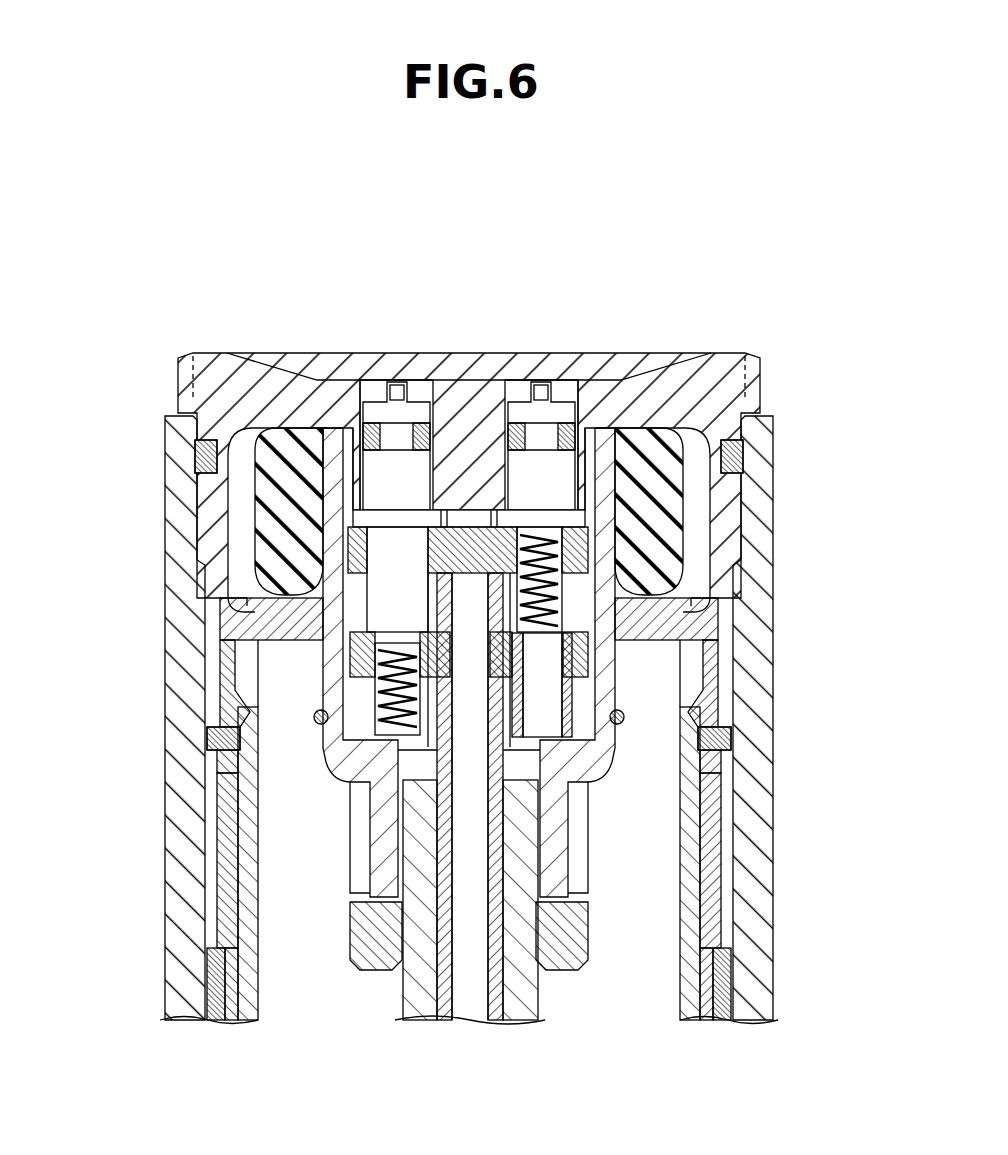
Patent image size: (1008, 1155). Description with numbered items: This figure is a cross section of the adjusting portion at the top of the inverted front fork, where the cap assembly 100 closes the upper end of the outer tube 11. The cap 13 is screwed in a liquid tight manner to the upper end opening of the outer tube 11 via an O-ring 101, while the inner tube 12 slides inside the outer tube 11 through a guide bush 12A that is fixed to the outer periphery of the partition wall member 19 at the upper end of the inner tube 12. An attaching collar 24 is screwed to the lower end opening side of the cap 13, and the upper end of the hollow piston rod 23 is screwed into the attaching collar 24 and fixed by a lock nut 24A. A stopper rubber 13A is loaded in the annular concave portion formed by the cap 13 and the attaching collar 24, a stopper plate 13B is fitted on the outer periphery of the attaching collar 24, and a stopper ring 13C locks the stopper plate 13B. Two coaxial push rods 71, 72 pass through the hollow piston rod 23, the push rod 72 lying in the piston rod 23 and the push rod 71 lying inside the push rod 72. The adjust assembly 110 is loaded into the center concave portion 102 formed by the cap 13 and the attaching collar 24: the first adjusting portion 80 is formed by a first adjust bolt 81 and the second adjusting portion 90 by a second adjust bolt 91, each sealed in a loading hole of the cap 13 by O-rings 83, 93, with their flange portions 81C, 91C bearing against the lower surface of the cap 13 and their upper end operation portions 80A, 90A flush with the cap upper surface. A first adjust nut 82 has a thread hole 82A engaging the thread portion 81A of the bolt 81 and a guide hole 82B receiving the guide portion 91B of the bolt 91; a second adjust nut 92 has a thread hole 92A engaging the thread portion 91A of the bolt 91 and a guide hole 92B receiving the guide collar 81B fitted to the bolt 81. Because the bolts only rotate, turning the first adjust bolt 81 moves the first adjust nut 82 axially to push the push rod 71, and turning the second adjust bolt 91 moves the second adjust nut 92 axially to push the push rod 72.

The cap assembly 100 is at (221, 345).
The cap 13 is at (205, 382).
The stopper rubber 13A is at (263, 523).
The stopper plate 13B is at (240, 625).
The stopper ring 13C is at (247, 712).
The outer tube 11 is at (176, 885).
The inner tube 12 is at (228, 933).
The guide bush 12A is at (210, 967).
The partition wall member 19 is at (225, 1002).
The attaching collar 24 is at (262, 758).
The lock nut 24A is at (567, 930).
The piston rod 23 is at (545, 983).
The push rod 71 is at (470, 828).
The push rod 72 is at (497, 865).
The first adjusting portion 80 is at (520, 403).
The upper end operation portion 80A is at (557, 382).
The first adjust bolt 81 is at (559, 662).
The thread portion 81A is at (692, 710).
The guide collar 81B is at (718, 740).
The flange portion 81C is at (608, 538).
The first adjust nut 82 is at (590, 565).
The thread hole 82A is at (555, 628).
The guide hole 82B is at (372, 565).
The O-ring 83 is at (587, 420).
The second adjusting portion 90 is at (377, 400).
The upper end operation portion 90A is at (407, 382).
The second adjust bolt 91 is at (380, 662).
The thread portion 91A is at (222, 740).
The guide portion 91B is at (378, 607).
The flange portion 91C is at (248, 499).
The second adjust nut 92 is at (575, 700).
The thread hole 92A is at (385, 660).
The guide hole 92B is at (545, 738).
The O-ring 93 is at (352, 422).
The O-ring 101 is at (200, 460).
The center concave portion 102 is at (316, 722).
The adjust assembly 110 is at (683, 557).